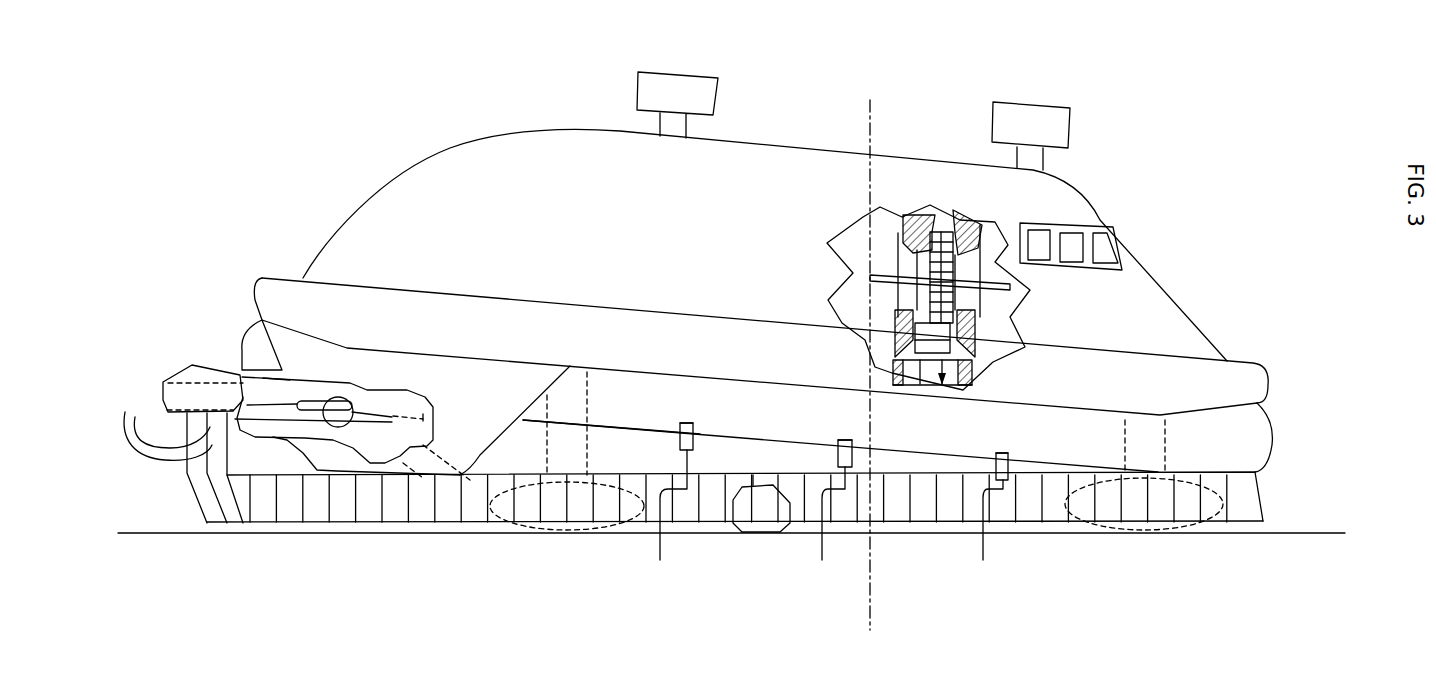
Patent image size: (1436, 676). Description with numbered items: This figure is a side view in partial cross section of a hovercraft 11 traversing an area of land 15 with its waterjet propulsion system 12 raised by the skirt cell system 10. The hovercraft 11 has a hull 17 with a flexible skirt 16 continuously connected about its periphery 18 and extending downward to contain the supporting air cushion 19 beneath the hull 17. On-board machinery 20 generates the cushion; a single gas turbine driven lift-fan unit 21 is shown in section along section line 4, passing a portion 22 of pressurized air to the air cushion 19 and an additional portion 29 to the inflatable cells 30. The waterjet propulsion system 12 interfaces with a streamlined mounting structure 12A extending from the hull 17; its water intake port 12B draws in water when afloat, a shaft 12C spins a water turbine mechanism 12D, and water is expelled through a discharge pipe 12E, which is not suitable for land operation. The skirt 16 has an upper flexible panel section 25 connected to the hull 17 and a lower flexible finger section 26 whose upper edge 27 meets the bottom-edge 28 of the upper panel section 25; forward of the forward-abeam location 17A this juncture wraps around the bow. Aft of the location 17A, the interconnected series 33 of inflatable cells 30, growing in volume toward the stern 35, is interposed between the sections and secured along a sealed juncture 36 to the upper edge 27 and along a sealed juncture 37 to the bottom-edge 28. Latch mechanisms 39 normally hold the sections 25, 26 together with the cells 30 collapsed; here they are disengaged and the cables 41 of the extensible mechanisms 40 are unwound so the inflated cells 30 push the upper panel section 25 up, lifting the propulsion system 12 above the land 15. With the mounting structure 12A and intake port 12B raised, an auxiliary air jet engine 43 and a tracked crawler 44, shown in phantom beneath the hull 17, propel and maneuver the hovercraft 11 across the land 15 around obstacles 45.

The section line 4 is at (853, 113).
The skirt cell system 10 is at (125, 412).
The hovercraft 11 is at (1140, 231).
The waterjet propulsion system 12 is at (283, 455).
The streamlined mounting structure 12A is at (427, 386).
The water intake port 12B is at (450, 484).
The shaft 12C is at (377, 425).
The water turbine mechanism 12D is at (337, 420).
The discharge pipe 12E is at (247, 402).
The land 15 is at (138, 533).
The flexible skirt 16 is at (195, 291).
The hull 17 is at (1267, 358).
The forward-abeam location 17A is at (1117, 470).
The periphery 18 is at (272, 263).
The air cushion 19 is at (207, 522).
The on-board machinery 20 is at (947, 193).
The lift-fan unit 21 is at (940, 297).
The portion of pressurized air 22 is at (897, 353).
The upper flexible panel section 25 is at (240, 342).
The lower flexible finger section 26 is at (1270, 489).
The upper edge 27 is at (712, 522).
The bottom-edge 28 is at (647, 477).
The additional portion of pressurized air 29 is at (977, 353).
The inflatable cells 30 is at (597, 476).
The series of inflatable cells 33 is at (617, 448).
The stern 35 is at (228, 288).
The sealed juncture 36 is at (1263, 470).
The sealed juncture 37 is at (611, 427).
The latch mechanism 39 is at (687, 423).
The extensible mechanism 40 is at (844, 438).
The cable 41 is at (826, 519).
The auxiliary air jet engine 43 is at (718, 96).
The tracked crawler 44 is at (610, 522).
The obstacle 45 is at (762, 512).